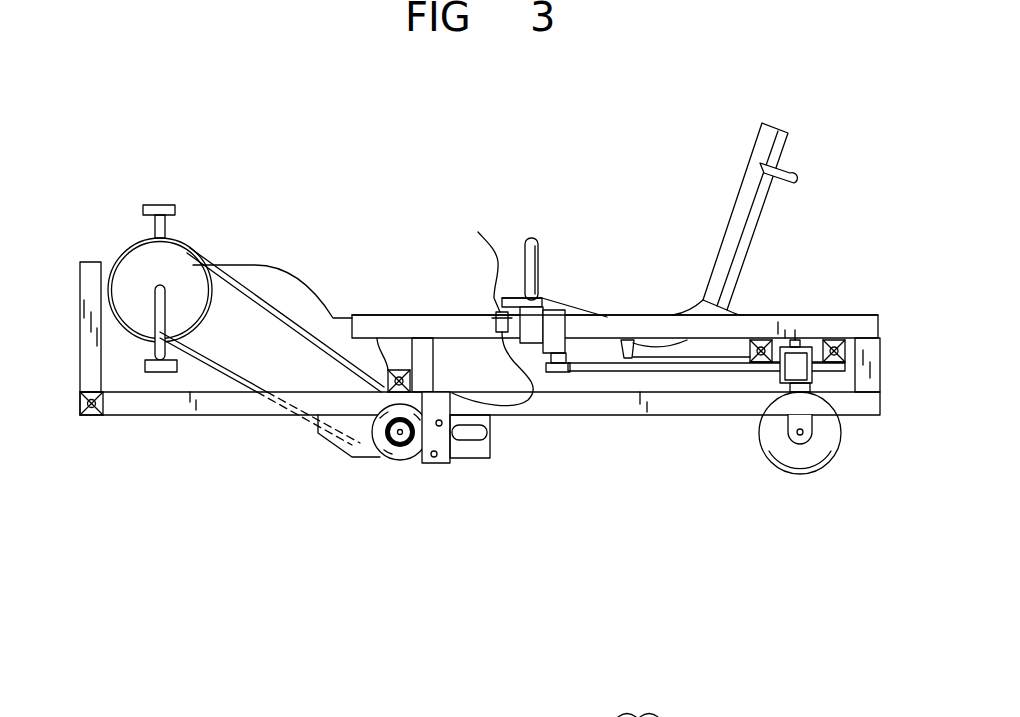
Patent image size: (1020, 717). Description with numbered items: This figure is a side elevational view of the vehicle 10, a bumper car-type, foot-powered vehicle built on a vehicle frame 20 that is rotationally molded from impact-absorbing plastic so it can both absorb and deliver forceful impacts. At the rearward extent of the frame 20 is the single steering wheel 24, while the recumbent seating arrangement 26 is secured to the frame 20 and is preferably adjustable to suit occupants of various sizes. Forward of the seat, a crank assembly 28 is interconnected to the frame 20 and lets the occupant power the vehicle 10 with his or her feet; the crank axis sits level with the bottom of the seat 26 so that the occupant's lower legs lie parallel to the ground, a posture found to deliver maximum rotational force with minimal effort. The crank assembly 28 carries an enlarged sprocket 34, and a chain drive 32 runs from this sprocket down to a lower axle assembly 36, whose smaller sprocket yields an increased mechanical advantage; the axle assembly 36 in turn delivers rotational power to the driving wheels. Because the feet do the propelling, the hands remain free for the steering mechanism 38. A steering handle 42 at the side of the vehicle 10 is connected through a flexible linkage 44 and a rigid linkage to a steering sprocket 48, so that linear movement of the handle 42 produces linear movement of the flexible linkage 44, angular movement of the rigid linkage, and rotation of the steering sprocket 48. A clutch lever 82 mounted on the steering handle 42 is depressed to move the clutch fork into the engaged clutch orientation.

The vehicle 10 is at (590, 165).
The vehicle frame 20 is at (83, 377).
The steering wheel 24 is at (804, 468).
The recumbent seating arrangement 26 is at (725, 217).
The crank assembly 28 is at (177, 264).
The chain drive 32 is at (256, 300).
The sprocket 34 is at (143, 276).
The lower axle assembly 36 is at (396, 434).
The steering mechanism 38 is at (822, 305).
The steering handle 42 is at (537, 253).
The flexible linkage 44 is at (667, 373).
The steering sprocket 48 is at (762, 373).
The clutch lever 82 is at (478, 232).